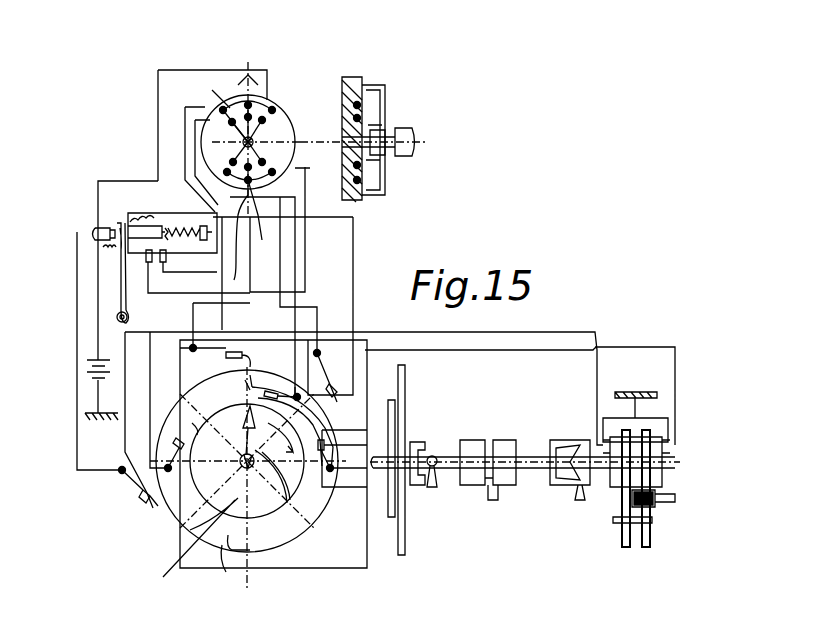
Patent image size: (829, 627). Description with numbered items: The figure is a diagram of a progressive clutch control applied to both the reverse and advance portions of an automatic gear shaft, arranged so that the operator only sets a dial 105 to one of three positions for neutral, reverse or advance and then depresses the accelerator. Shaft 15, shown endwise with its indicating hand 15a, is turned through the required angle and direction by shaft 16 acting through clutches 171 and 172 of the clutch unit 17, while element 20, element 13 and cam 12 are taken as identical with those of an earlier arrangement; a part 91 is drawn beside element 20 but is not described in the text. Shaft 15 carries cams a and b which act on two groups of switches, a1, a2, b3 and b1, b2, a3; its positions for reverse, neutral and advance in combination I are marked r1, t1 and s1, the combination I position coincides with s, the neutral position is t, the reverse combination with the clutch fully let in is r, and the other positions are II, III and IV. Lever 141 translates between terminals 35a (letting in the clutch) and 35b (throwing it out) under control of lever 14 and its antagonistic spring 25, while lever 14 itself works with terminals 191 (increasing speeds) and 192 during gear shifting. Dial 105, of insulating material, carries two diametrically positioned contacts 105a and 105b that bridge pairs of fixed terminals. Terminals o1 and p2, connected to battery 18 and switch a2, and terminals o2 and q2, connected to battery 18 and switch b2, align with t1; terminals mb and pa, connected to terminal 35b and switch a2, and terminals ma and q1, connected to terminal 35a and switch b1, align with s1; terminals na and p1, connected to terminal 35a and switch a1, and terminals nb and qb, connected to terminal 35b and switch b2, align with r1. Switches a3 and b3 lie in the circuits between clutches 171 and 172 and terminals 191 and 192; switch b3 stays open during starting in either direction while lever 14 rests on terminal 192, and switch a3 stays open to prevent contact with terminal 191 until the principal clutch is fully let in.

The neutral position t1 is at (229, 124).
The terminal na is at (223, 110).
The terminal nb is at (232, 118).
The terminal ma is at (252, 105).
The terminal mb is at (252, 117).
The advance position s1 is at (264, 116).
The terminal o1 is at (272, 106).
The terminal o2 is at (262, 102).
The reverse position r1 is at (195, 78).
The terminal pa is at (233, 160).
The terminal q1 is at (225, 170).
The terminal p1 is at (266, 163).
The terminal qb is at (275, 175).
The terminal p2 is at (422, 198).
The terminal q2 is at (408, 220).
The dial 105 is at (342, 142).
The contact 105b is at (385, 105).
The contact 105a is at (385, 165).
The battery 18 is at (88, 370).
The lever 14 is at (118, 282).
The terminal 191 is at (98, 228).
The terminal 192 is at (118, 218).
The lever 141 is at (140, 218).
The antagonistic spring 25 is at (182, 228).
The terminal 35a is at (146, 262).
The terminal 35b is at (166, 275).
The reverse combination position r is at (190, 433).
The cam a is at (443, 545).
The shaft 15 is at (182, 533).
The indicating hand 15a is at (288, 490).
The cam b is at (440, 565).
The switch a2 is at (289, 416).
The neutral position t is at (247, 352).
The switch b2 is at (234, 352).
The switch b1 is at (335, 400).
The combination I position s is at (336, 398).
The combination I is at (345, 412).
The switch b3 is at (354, 451).
The switch a1 is at (176, 440).
The switch a3 is at (138, 503).
The operating position IV is at (160, 513).
The operating position II is at (342, 507).
The operating position III is at (262, 582).
The element 20 is at (425, 445).
The pawl 91 is at (436, 485).
The element 13 is at (472, 440).
The cam 12 is at (562, 440).
The gear 17 is at (623, 540).
The clutch 171 is at (620, 480).
The clutch 172 is at (652, 480).
The shaft 16 is at (662, 500).